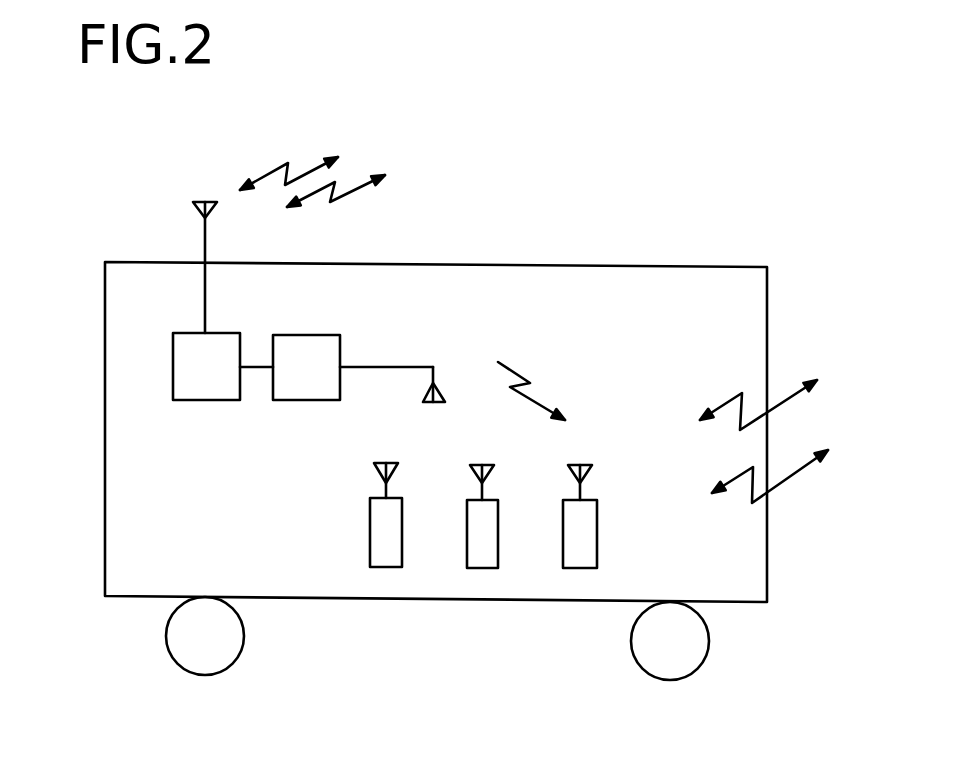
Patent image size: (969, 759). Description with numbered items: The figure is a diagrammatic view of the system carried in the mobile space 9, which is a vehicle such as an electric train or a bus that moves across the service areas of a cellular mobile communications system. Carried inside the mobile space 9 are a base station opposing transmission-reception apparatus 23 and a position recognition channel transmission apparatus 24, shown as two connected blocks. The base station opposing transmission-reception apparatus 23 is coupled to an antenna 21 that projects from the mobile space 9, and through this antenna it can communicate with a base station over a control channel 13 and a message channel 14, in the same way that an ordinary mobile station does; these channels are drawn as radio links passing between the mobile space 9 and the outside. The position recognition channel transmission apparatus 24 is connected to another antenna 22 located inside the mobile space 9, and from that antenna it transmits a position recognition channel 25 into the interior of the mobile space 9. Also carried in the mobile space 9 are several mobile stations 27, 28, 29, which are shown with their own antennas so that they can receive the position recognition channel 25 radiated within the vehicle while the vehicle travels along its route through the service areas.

The mobile space 9 is at (645, 266).
The control channel 13 is at (551, 272).
The message channel 14 is at (578, 322).
The antenna 21 is at (205, 242).
The another antenna 22 is at (378, 367).
The base station opposing transmission-reception apparatus 23 is at (185, 372).
The position recognition channel transmission apparatus 24 is at (300, 387).
The position recognition channel 25 is at (508, 370).
The mobile station 27 is at (390, 552).
The mobile station 28 is at (483, 554).
The mobile station 29 is at (585, 554).